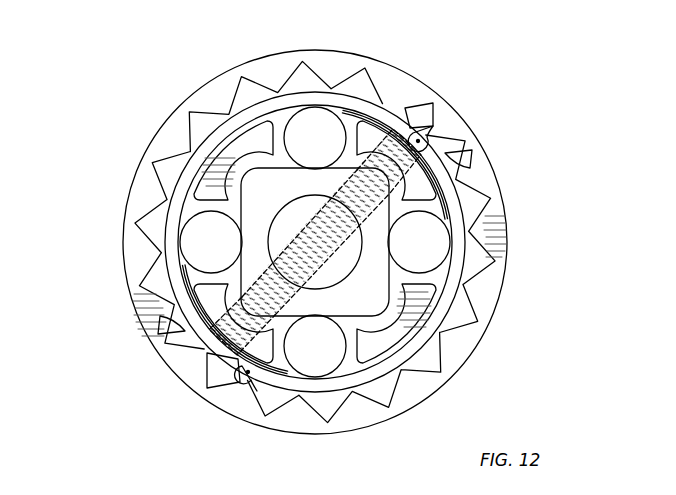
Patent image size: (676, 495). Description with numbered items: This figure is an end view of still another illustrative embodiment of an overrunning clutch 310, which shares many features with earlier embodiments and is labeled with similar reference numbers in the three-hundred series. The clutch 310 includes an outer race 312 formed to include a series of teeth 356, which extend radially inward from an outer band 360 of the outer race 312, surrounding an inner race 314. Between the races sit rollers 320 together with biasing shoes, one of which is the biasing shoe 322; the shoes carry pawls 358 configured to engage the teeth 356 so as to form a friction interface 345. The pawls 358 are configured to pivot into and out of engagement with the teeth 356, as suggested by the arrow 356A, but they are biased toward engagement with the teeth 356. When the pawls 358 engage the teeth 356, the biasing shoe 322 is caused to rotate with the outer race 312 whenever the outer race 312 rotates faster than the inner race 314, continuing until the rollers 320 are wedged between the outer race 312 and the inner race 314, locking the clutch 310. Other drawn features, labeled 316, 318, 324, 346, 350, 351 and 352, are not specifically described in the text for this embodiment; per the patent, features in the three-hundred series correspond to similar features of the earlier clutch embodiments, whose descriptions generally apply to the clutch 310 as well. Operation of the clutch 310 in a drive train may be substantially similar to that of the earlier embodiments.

The overrunning clutch 310 is at (90, 90).
The outer race 312 is at (414, 69).
The inner race 314 is at (281, 164).
The base circle of toothed ring 316 is at (181, 213).
The ring inner surface 318 is at (182, 203).
The rollers 320 is at (324, 129).
The biasing shoe 322 is at (449, 202).
The hatched region 324 is at (350, 351).
The friction interface 345 is at (451, 119).
The pads 346 is at (367, 144).
The hidden bar 350 is at (344, 191).
The central bore 351 is at (252, 268).
The bar ends 352 is at (458, 222).
The teeth 356 is at (454, 152).
The arrow 356A is at (218, 399).
The pawls 358 is at (424, 116).
The outer band 360 is at (490, 153).